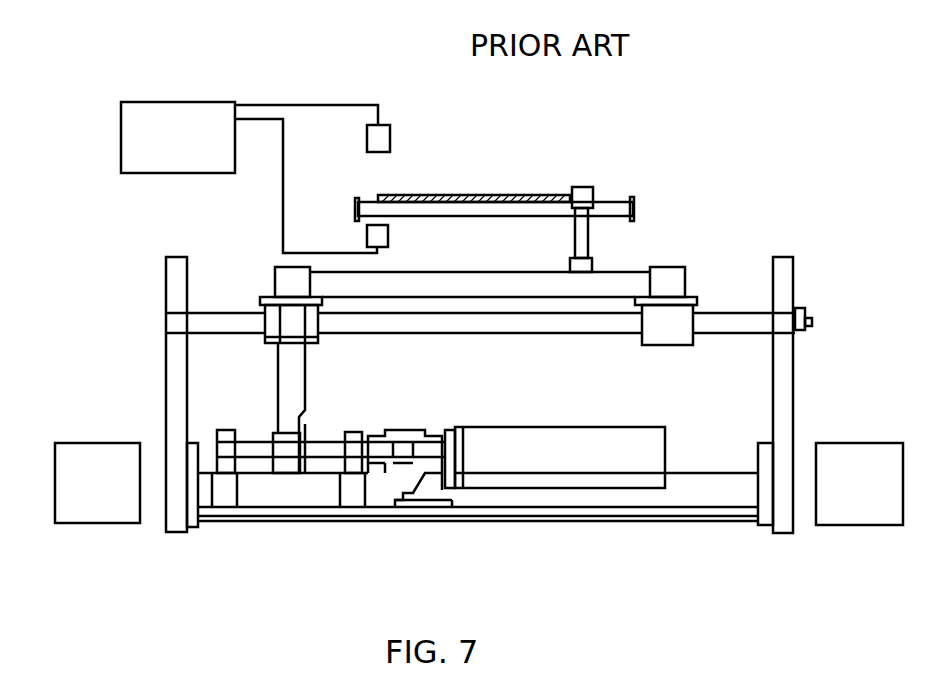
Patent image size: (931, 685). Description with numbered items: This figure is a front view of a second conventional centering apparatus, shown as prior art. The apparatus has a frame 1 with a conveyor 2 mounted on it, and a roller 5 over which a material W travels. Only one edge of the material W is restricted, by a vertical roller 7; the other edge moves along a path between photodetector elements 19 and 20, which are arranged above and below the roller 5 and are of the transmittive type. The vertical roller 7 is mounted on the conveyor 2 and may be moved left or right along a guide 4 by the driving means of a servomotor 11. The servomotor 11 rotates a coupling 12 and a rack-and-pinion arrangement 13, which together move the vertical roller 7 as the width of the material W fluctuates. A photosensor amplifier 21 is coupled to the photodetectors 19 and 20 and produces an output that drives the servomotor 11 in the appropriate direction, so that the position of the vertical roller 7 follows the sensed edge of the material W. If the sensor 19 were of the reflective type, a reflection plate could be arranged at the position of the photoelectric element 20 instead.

The frame 1 is at (844, 450).
The conveyor 2 is at (625, 273).
The guide 4 is at (723, 313).
The roller 5 is at (508, 208).
The vertical roller 7 is at (593, 192).
The servomotor 11 is at (560, 480).
The coupling 12 is at (372, 473).
The rack-and-pinion arrangement 13 is at (318, 457).
The photodetector element 19 is at (362, 145).
The photodetector element 20 is at (390, 237).
The photosensor amplifier 21 is at (121, 158).
The material W is at (422, 192).